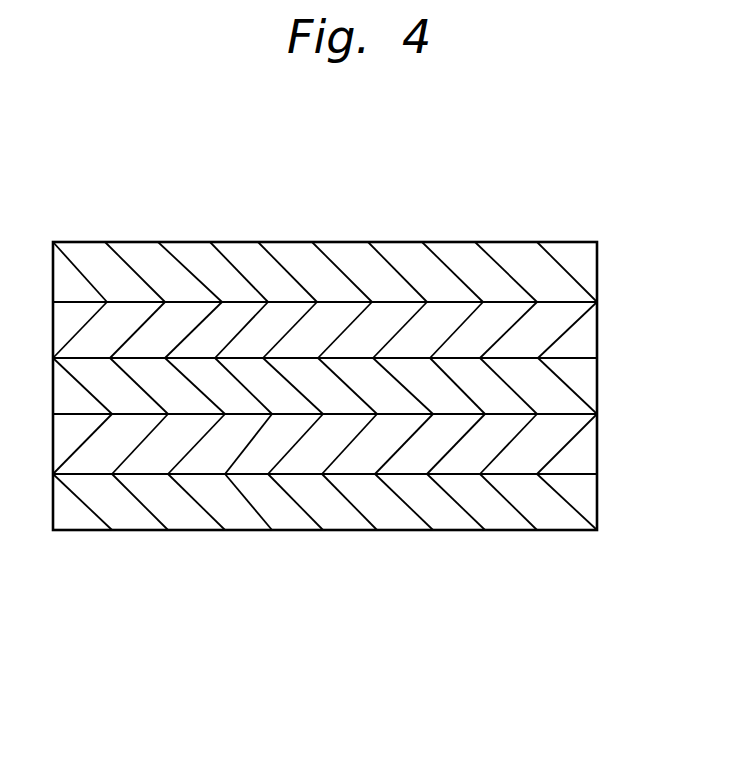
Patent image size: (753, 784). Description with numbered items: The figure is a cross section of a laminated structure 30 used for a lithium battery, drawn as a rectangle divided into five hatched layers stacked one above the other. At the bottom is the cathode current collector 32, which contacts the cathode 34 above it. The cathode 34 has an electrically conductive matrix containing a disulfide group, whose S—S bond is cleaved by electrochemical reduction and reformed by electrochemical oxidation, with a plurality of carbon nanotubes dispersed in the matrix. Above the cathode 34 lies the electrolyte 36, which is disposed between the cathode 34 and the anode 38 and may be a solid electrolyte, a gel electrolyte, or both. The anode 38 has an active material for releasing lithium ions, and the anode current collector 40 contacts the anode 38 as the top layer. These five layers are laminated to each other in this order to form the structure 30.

The laminated structure 30 is at (96, 584).
The cathode current collector 32 is at (583, 508).
The cathode 34 is at (583, 451).
The electrolyte 36 is at (583, 381).
The anode 38 is at (583, 333).
The anode current collector 40 is at (583, 272).